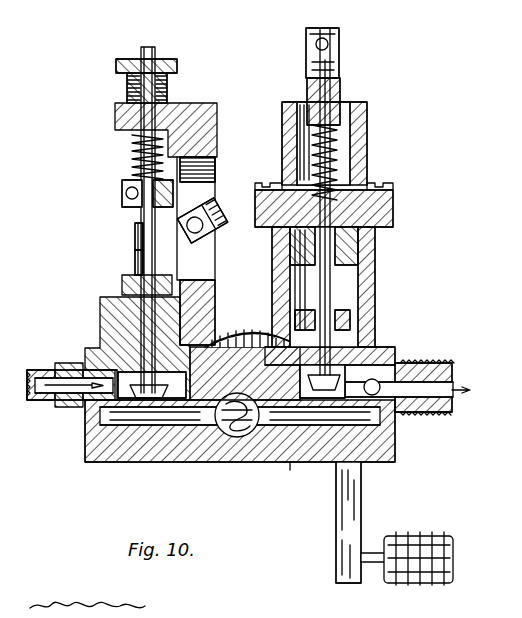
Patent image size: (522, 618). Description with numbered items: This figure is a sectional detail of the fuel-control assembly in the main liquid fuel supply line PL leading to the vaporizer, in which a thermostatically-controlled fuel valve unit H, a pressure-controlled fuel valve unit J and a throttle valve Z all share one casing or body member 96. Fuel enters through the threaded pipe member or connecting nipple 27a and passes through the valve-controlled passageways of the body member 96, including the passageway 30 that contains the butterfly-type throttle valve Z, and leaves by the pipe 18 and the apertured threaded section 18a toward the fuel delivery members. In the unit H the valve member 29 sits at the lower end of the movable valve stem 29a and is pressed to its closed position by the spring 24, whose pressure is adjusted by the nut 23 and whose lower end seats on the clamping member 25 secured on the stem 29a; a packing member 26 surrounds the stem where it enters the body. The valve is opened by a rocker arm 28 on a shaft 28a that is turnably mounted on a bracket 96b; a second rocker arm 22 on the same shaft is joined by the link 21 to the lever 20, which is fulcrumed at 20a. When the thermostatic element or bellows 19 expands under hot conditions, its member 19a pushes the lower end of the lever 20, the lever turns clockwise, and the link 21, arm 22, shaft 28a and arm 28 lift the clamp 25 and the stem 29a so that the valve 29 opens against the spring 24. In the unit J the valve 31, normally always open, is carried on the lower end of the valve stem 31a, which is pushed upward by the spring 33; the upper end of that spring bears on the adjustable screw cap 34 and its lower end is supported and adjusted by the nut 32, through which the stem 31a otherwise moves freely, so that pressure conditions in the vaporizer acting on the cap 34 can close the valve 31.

The valve stem 29a is at (150, 48).
The nut 23 is at (178, 65).
The bracket 96b is at (215, 138).
The thermostatically-controlled fuel valve unit H is at (215, 128).
The shaft 28a is at (200, 200).
The rocker arm 28 is at (218, 210).
The spring 24 is at (132, 162).
The clamping member 25 is at (122, 184).
The rocker arm 22 is at (135, 228).
The link 21 is at (135, 257).
The packing nut 26 is at (124, 290).
The pipe line PL is at (69, 344).
The threaded pipe member 27a is at (48, 368).
The valve member 29 is at (100, 414).
The passageway 30 is at (100, 428).
The throttle valve Z is at (200, 435).
The body member 96 is at (247, 442).
The fulcrum 20a is at (318, 462).
The lever 20 is at (240, 335).
The thermostatic element 19 is at (443, 547).
The member 19a is at (376, 563).
The pipe 18 is at (402, 366).
The threaded section 18a is at (416, 414).
The valve 31 is at (384, 350).
The valve stem 31a is at (338, 300).
The nut 32 is at (350, 262).
The pressure-controlled fuel valve unit J is at (372, 160).
The spring 33 is at (338, 133).
The adjustable screw cap 34 is at (340, 76).